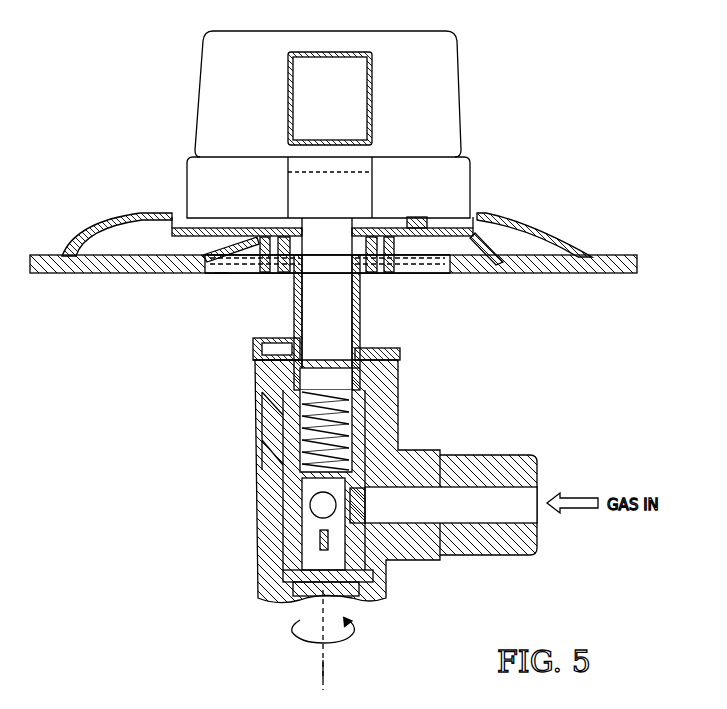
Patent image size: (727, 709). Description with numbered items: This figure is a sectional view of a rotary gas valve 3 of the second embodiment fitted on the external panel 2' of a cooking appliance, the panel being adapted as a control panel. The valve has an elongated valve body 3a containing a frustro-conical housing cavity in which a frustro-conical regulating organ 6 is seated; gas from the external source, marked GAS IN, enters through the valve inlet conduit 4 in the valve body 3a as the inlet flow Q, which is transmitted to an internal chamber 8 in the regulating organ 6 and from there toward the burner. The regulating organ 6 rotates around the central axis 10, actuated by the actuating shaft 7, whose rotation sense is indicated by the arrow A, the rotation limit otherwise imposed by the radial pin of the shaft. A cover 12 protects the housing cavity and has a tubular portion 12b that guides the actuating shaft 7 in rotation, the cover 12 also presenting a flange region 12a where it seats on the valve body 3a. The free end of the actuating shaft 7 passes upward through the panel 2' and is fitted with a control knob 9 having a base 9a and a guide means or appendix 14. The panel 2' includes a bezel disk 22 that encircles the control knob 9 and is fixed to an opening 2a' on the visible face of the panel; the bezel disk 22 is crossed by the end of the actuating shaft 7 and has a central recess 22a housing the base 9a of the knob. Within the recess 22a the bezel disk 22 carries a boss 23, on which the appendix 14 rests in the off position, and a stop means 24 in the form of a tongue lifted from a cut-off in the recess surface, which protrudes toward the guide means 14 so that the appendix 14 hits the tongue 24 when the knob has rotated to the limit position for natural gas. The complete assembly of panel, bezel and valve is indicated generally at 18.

The control knob 9 is at (453, 102).
The base 9a is at (200, 184).
The valve assembly 18 is at (540, 156).
The bezel disk 22 is at (520, 240).
The external panel 2' is at (348, 245).
The boss 23 is at (212, 241).
The opening 2a' is at (210, 289).
The central recess 22a is at (265, 238).
The guide means 14 is at (413, 236).
The stop means 24 is at (483, 240).
The actuating shaft 7 is at (326, 305).
The cover 12 is at (365, 358).
The cap flange 12a is at (253, 363).
The tubular portion 12b is at (360, 333).
The rotary gas valve 3 is at (462, 410).
The valve body 3a is at (258, 458).
The regulating organ 6 is at (278, 487).
The internal chamber 8 is at (262, 548).
The inlet flow Q is at (478, 561).
The valve inlet conduit 4 is at (481, 494).
The rotation limit A is at (335, 640).
The central axis 10 is at (324, 671).